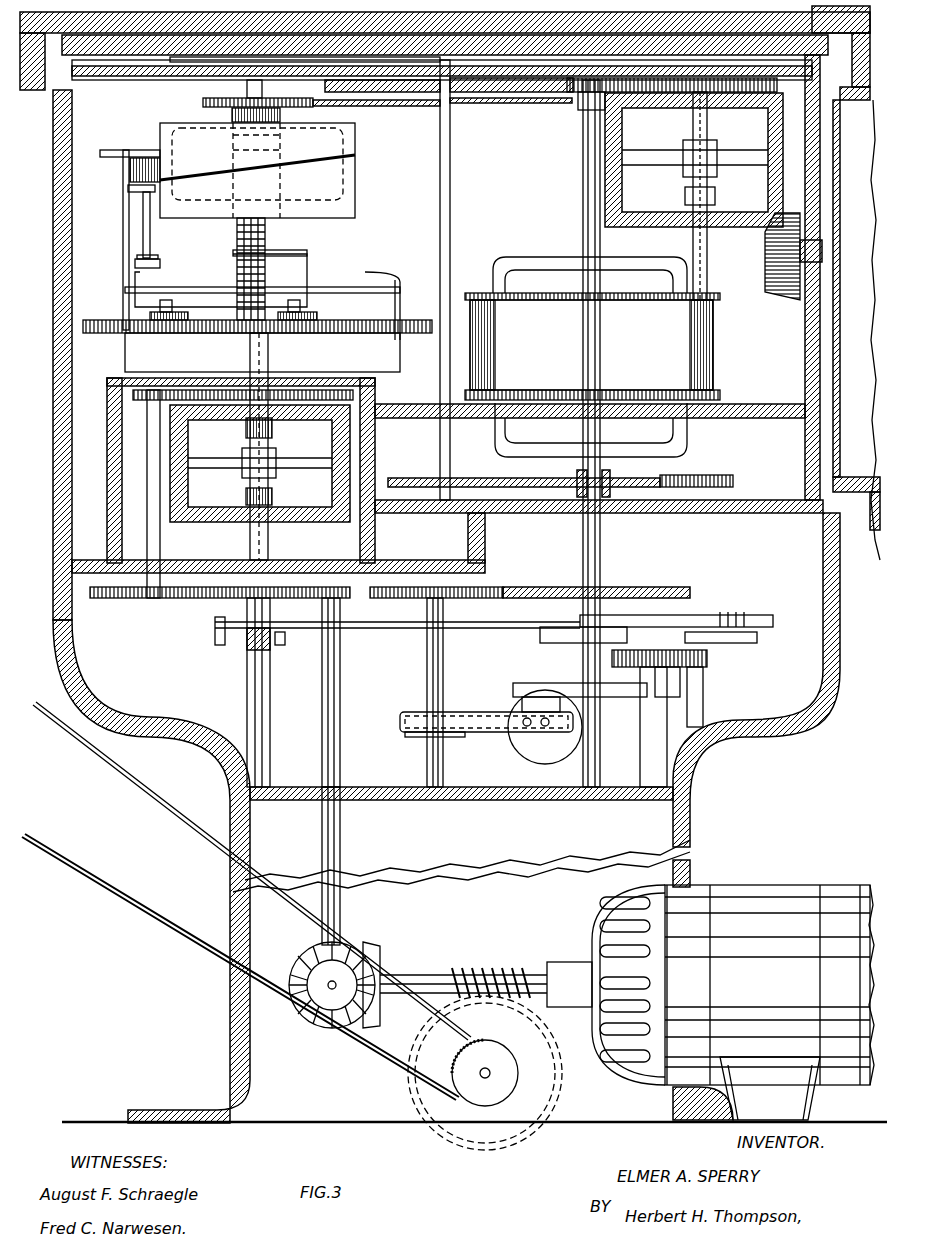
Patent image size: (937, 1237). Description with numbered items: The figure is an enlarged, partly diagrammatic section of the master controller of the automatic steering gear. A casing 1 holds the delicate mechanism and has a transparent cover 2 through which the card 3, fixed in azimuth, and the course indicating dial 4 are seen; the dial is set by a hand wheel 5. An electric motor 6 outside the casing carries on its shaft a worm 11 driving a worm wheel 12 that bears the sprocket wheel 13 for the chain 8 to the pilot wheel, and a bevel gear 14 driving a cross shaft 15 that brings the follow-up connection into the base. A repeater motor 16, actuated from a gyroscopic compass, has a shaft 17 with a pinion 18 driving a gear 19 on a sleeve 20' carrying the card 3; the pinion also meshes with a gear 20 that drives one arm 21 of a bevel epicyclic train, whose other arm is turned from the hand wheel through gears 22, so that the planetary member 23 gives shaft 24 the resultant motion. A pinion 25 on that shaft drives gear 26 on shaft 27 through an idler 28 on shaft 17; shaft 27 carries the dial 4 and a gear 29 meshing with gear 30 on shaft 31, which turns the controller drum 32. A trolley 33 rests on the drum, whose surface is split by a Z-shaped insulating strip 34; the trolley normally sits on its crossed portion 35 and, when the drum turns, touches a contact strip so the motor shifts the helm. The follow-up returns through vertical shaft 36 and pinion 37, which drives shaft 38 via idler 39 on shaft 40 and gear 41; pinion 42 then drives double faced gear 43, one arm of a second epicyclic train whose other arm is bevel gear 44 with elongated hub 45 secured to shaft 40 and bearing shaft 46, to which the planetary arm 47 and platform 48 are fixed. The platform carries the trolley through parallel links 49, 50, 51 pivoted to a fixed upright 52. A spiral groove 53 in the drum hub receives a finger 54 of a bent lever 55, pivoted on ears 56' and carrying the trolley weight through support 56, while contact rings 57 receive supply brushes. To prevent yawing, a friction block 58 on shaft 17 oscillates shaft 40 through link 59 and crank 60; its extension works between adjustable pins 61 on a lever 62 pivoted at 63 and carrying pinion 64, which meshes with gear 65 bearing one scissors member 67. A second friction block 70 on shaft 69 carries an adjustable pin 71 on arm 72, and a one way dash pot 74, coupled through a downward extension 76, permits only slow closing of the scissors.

The casing 1 is at (840, 688).
The transparent cover 2 is at (735, 35).
The card 3 is at (665, 62).
The course indicating dial 4 is at (230, 60).
The hand wheel 5 is at (873, 530).
The electric motor 6 is at (710, 1002).
The chain 8 is at (145, 912).
The worm 11 is at (463, 969).
The worm wheel 12 is at (562, 1074).
The sprocket wheel 13 is at (462, 1055).
The bevel gear 14 is at (380, 960).
The cross shaft 15 is at (332, 985).
The repeater motor 16 is at (592, 357).
The motor shaft 17 is at (583, 208).
The pinion 18 is at (578, 104).
The gear 19 is at (325, 88).
The gear 20 is at (687, 84).
The sleeve 20' is at (425, 280).
The epicyclic train arm 21 is at (758, 104).
The gears 22 is at (778, 292).
The planetary member 23 is at (660, 156).
The shaft 24 is at (727, 262).
The pinion 25 is at (733, 481).
The gear 26 is at (396, 478).
The shaft 27 is at (447, 418).
The idler 28 is at (577, 478).
The gear 29 is at (540, 103).
The gear 30 is at (203, 100).
The shaft 31 is at (247, 88).
The controller drum 32 is at (356, 180).
The trolley 33 is at (158, 150).
The insulating strip 34 is at (303, 152).
The crossed portion 35 is at (163, 168).
The vertical shaft 36 is at (340, 890).
The pinion 37 is at (352, 599).
The shaft 38 is at (160, 540).
The idler 39 is at (322, 604).
The shaft 40 is at (248, 682).
The gear 41 is at (128, 598).
The pinion 42 is at (138, 398).
The double faced gear 43 is at (306, 420).
The bevel gear 44 is at (302, 506).
The elongated hub 45 is at (272, 536).
The shaft 46 is at (246, 432).
The planetary arm 47 is at (222, 468).
The platform 48 is at (350, 333).
The parallel link 49 is at (330, 287).
The parallel link 50 is at (324, 372).
The parallel link 51 is at (124, 248).
The fixed upright 52 is at (402, 303).
The spiral groove 53 is at (266, 230).
The finger 54 is at (310, 252).
The bent lever 55 is at (160, 264).
The support 56 is at (164, 225).
The ears 56' is at (233, 330).
The contact rings 57 is at (280, 115).
The friction block 58 is at (560, 640).
The link 59 is at (398, 628).
The crank 60 is at (697, 618).
The adjustable pins 61 is at (738, 612).
The lever 62 is at (745, 643).
The pivot 63 is at (703, 683).
The pinion 64 is at (707, 658).
The gear 65 is at (640, 670).
The scissors member 67 is at (555, 683).
The shaft 69 is at (443, 668).
The friction block 70 is at (428, 712).
The adjustable pin 71 is at (522, 704).
The arm 72 is at (487, 732).
The one way dash pot 74 is at (538, 756).
The downward extension 76 is at (547, 722).